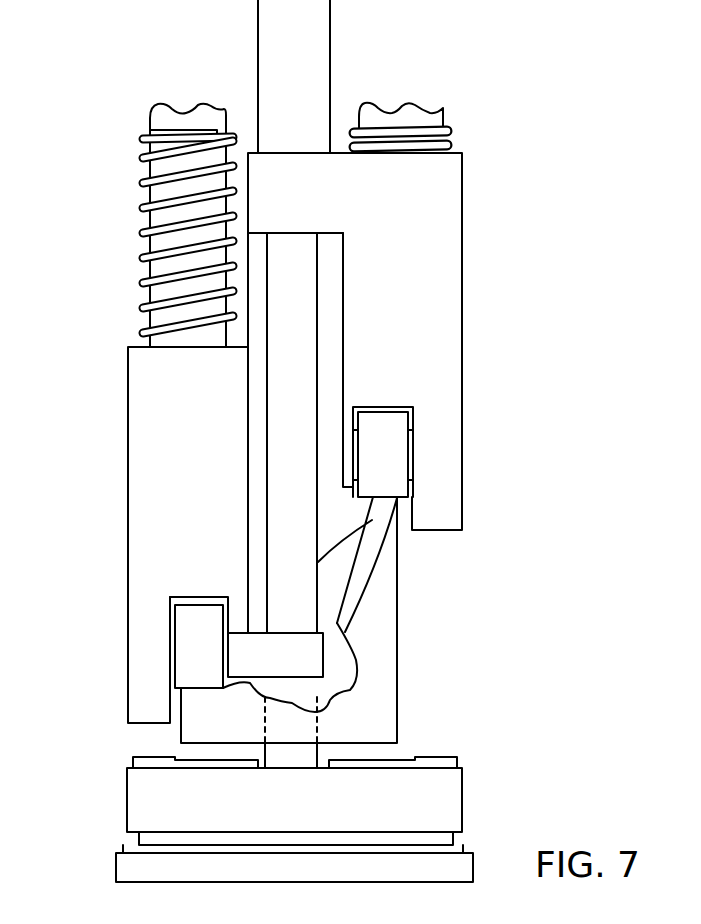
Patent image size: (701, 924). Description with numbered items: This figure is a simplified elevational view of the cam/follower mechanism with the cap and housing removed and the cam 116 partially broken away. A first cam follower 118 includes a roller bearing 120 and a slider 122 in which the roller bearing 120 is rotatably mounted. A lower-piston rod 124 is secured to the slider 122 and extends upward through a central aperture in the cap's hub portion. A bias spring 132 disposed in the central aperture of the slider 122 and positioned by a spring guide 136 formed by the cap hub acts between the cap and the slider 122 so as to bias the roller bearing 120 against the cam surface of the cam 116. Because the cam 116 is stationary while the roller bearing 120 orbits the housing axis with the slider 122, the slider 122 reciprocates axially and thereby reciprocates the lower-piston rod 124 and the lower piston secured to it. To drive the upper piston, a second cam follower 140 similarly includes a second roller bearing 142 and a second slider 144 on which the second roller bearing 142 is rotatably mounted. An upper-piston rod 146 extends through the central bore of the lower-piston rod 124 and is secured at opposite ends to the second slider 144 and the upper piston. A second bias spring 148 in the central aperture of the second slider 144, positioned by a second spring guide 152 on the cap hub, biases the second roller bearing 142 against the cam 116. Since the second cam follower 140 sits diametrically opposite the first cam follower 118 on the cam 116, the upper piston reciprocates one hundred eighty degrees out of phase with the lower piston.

The cam 116 is at (387, 601).
The first cam follower 118 is at (494, 142).
The roller bearing 120 is at (400, 460).
The slider 122 is at (462, 382).
The lower-piston rod 124 is at (332, 63).
The bias spring 132 is at (449, 124).
The spring guide 136 is at (440, 113).
The second cam follower 140 is at (105, 560).
The second roller bearing 142 is at (185, 652).
The second slider 144 is at (128, 433).
The upper-piston rod 146 is at (320, 296).
The second bias spring 148 is at (139, 157).
The second spring guide 152 is at (162, 121).